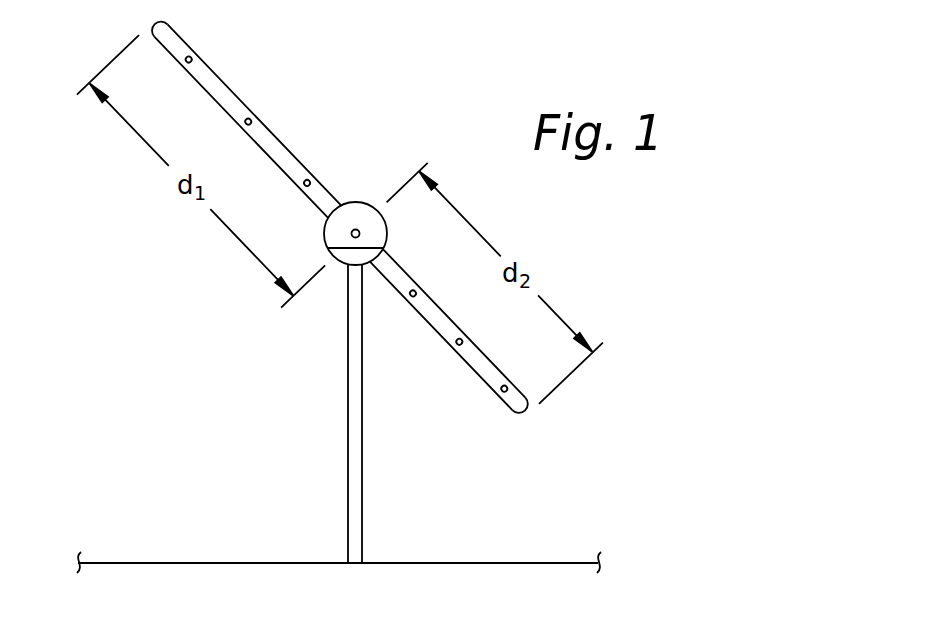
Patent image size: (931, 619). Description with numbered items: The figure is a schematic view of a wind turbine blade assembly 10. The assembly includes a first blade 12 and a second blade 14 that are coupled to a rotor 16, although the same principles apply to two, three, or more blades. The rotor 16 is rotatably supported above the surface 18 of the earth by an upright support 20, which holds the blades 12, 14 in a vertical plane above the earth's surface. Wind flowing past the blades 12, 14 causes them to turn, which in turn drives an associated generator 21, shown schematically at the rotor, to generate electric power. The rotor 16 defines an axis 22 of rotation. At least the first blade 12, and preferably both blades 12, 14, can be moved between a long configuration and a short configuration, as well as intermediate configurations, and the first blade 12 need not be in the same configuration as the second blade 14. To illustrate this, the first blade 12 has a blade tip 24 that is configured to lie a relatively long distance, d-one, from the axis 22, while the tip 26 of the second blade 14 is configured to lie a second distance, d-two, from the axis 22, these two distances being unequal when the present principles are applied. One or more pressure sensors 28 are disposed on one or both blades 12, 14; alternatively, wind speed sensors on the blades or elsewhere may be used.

The wind turbine blade assembly 10 is at (328, 308).
The first blade 12 is at (217, 77).
The second blade 14 is at (485, 385).
The rotor 16 is at (368, 266).
The surface of the earth 18 is at (448, 565).
The upright support 20 is at (362, 460).
The generator 21 is at (343, 255).
The axis of rotation 22 is at (356, 231).
The blade tip 24 is at (150, 24).
The tip 26 is at (528, 417).
The pressure sensors 28 is at (307, 180).